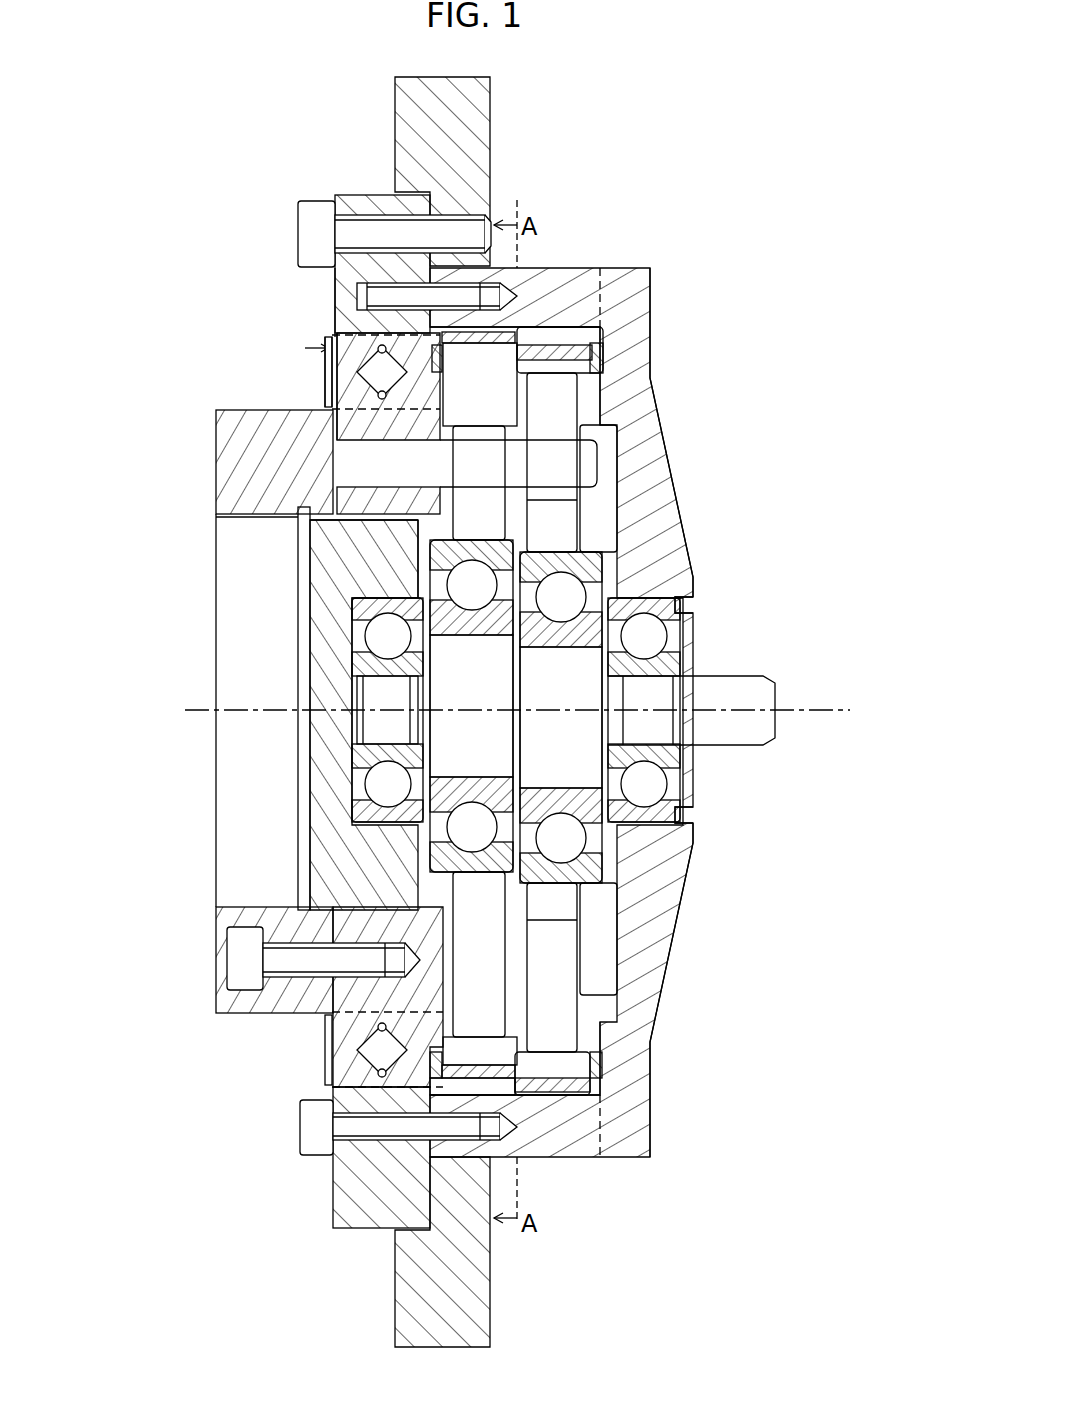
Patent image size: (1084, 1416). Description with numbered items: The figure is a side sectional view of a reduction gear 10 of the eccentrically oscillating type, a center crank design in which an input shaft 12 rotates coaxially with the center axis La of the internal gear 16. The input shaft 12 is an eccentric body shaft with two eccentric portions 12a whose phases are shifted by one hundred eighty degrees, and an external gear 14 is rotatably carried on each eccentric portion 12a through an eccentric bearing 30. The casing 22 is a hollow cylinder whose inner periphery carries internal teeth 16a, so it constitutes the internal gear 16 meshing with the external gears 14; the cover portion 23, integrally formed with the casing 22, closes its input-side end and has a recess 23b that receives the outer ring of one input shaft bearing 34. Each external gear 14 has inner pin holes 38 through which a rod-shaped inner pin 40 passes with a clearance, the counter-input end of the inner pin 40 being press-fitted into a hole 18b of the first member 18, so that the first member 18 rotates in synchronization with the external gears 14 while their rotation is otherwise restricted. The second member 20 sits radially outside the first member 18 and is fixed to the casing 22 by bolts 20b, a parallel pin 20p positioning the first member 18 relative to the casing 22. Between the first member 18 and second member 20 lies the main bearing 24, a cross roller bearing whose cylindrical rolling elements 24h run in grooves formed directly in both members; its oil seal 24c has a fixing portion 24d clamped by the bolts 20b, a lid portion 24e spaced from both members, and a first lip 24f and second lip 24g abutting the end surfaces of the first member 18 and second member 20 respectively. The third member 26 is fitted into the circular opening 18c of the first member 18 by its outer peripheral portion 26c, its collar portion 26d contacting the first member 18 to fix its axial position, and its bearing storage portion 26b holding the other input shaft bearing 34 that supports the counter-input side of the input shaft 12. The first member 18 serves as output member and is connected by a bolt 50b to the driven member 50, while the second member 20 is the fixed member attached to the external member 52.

The reduction gear 10 is at (529, 141).
The input shaft 12 is at (743, 725).
The eccentric portion 12a is at (458, 640).
The external gear 14 is at (567, 363).
The internal gear 16 is at (527, 310).
The internal teeth 16a is at (577, 337).
The first member 18 is at (343, 460).
The hole 18b is at (333, 413).
The opening 18c is at (410, 493).
The second member 20 is at (345, 290).
The bolt 20b is at (318, 222).
The parallel pin 20p is at (358, 293).
The casing 22 is at (568, 287).
The cover portion 23 is at (637, 347).
The recess 23b is at (648, 596).
The main bearing 24 is at (277, 648).
The oil seal 24c is at (327, 383).
The fixing portion 24d is at (325, 340).
The lid portion 24e is at (330, 370).
The first lip 24f is at (330, 397).
The second lip 24g is at (332, 353).
The rolling element 24h is at (330, 347).
The third member 26 is at (330, 610).
The bearing storage portion 26b is at (343, 578).
The outer peripheral portion 26c is at (303, 550).
The collar portion 26d is at (297, 518).
The eccentric bearing 30 is at (428, 858).
The input shaft bearing 34 is at (350, 662).
The inner pin hole 38 is at (482, 427).
The inner pin 40 is at (595, 460).
The driven member 50 is at (243, 492).
The bolt 50b is at (243, 955).
The external member 52 is at (410, 107).
The center axis La is at (815, 712).